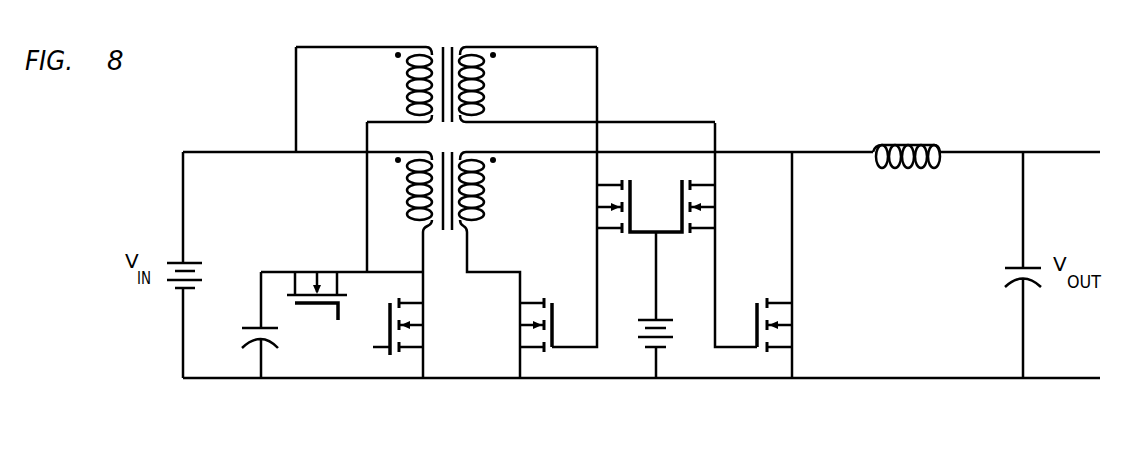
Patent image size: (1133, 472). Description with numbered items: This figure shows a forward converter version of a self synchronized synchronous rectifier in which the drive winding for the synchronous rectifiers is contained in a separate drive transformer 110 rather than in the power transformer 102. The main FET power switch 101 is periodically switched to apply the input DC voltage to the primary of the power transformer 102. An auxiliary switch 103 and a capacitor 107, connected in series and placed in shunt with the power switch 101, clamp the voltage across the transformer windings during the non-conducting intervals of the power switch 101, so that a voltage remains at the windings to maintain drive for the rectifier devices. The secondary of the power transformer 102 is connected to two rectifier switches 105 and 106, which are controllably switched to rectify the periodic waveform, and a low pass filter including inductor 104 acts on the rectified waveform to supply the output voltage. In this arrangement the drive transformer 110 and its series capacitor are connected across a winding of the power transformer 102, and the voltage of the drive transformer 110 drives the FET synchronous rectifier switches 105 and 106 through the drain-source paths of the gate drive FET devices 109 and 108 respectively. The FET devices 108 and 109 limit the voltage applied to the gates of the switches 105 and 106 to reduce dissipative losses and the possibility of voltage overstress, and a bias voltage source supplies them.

The main FET power switch 101 is at (425, 330).
The power transformer 102 is at (440, 153).
The auxiliary switch 103 is at (315, 268).
The inductor 104 is at (938, 163).
The rectifier switch 105 is at (793, 335).
The rectifier switch 106 is at (518, 327).
The capacitor 107 is at (244, 327).
The gate drive FET device 108 is at (594, 226).
The gate drive FET device 109 is at (716, 217).
The drive transformer 110 is at (484, 75).